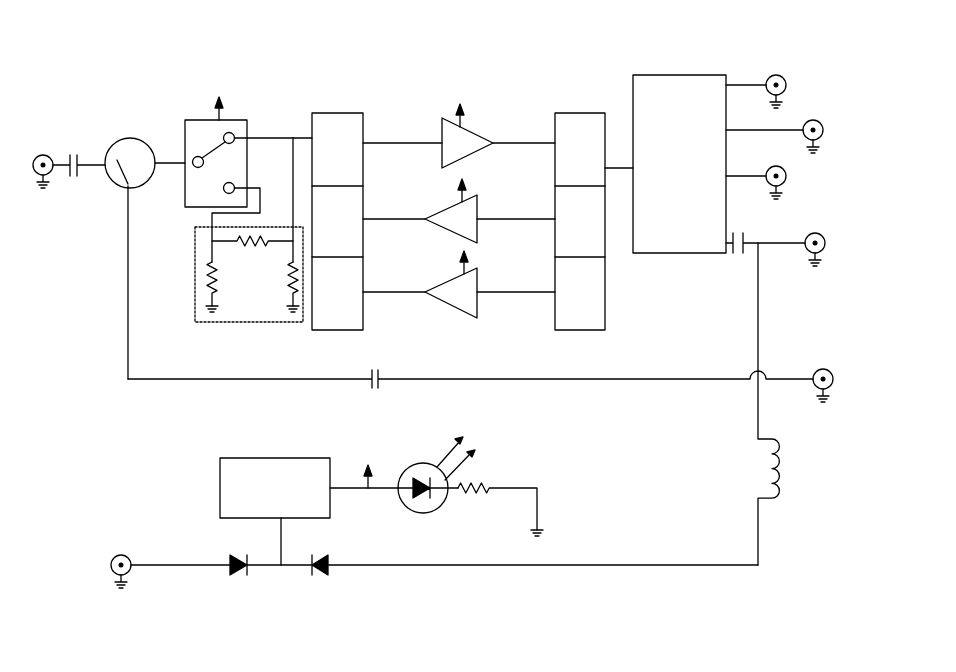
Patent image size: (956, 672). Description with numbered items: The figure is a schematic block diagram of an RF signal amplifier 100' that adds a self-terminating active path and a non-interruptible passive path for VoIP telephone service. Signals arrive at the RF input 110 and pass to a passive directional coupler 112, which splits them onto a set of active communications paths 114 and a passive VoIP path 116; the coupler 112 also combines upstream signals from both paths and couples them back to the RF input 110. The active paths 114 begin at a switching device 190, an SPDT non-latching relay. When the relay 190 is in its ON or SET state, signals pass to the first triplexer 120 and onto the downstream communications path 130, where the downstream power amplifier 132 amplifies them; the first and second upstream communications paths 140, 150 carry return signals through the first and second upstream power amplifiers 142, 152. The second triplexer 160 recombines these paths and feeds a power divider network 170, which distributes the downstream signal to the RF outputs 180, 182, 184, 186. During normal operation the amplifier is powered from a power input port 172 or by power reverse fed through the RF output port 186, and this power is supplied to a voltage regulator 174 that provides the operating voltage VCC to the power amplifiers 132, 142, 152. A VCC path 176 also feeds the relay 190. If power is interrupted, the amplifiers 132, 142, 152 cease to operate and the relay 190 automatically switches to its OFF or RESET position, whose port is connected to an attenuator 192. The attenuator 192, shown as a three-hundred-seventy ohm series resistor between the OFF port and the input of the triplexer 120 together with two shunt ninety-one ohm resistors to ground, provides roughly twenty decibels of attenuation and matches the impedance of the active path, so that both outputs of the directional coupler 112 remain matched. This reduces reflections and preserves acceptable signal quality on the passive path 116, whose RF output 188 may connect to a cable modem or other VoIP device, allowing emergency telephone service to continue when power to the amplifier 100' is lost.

The RF signal amplifier 100' is at (447, 326).
The RF input 110 is at (40, 184).
The passive directional coupler 112 is at (115, 180).
The active communications paths 114 is at (443, 191).
The passive VoIP path 116 is at (470, 396).
The first triplexer 120 is at (338, 333).
The downstream communications path 130 is at (402, 135).
The downstream power amplifier 132 is at (438, 150).
The first upstream communications path 140 is at (394, 211).
The first upstream power amplifier 142 is at (447, 232).
The second upstream communications path 150 is at (394, 285).
The second upstream power amplifier 152 is at (448, 306).
The second triplexer 160 is at (577, 333).
The power divider network 170 is at (683, 257).
The power input port 172 is at (110, 573).
The voltage regulator 174 is at (218, 477).
The VCC path 176 is at (214, 108).
The RF output 180 is at (777, 83).
The RF output 182 is at (802, 133).
The RF output 184 is at (789, 183).
The RF output port 186 is at (803, 239).
The RF output 188 is at (810, 384).
The switching device 190 is at (185, 198).
The attenuator 192 is at (196, 276).